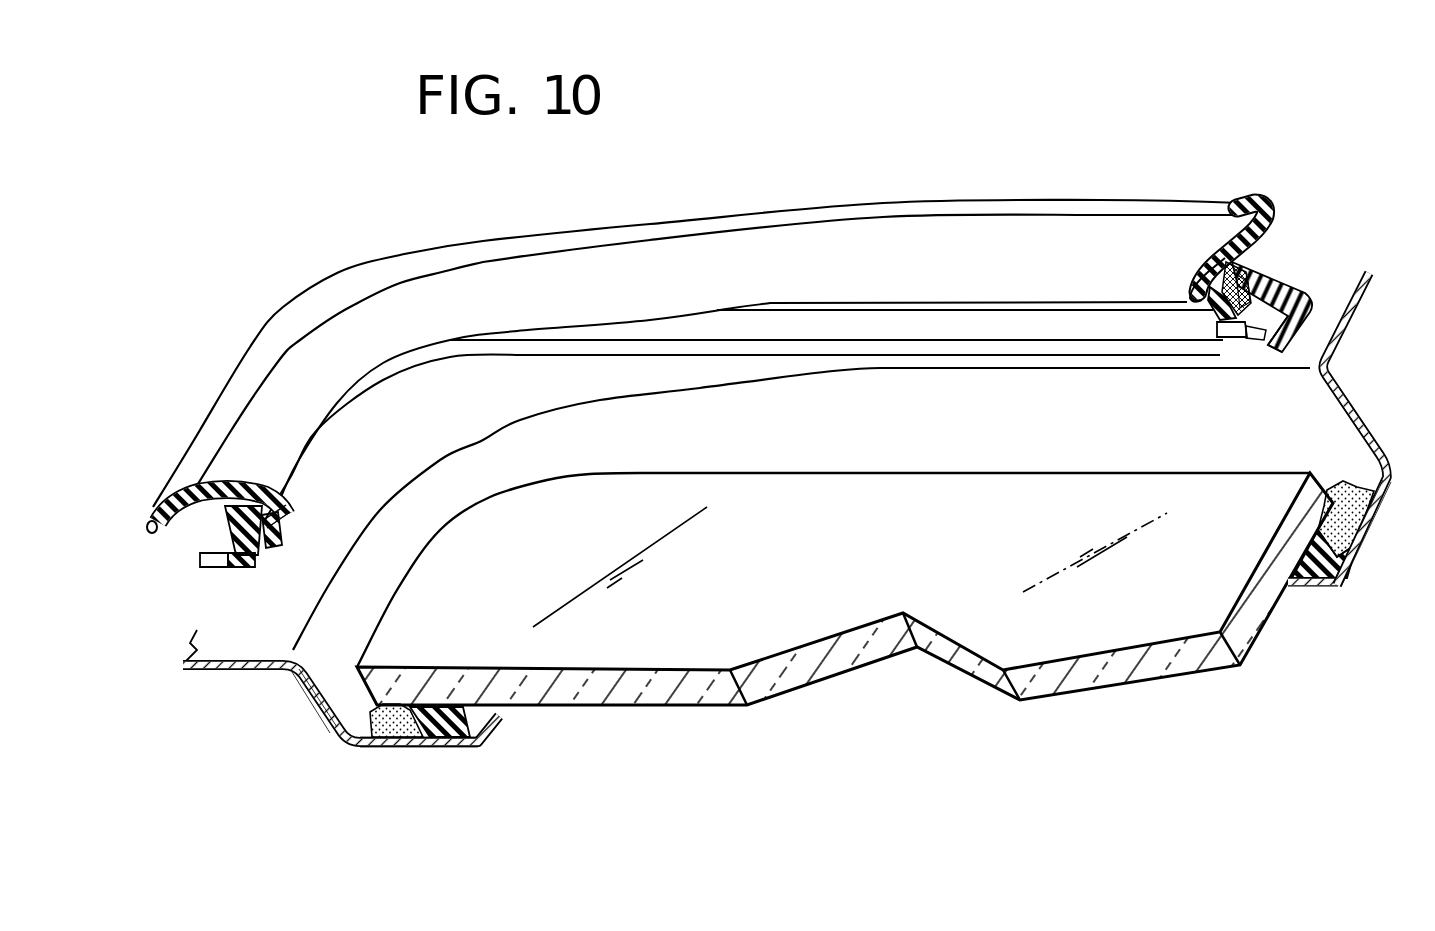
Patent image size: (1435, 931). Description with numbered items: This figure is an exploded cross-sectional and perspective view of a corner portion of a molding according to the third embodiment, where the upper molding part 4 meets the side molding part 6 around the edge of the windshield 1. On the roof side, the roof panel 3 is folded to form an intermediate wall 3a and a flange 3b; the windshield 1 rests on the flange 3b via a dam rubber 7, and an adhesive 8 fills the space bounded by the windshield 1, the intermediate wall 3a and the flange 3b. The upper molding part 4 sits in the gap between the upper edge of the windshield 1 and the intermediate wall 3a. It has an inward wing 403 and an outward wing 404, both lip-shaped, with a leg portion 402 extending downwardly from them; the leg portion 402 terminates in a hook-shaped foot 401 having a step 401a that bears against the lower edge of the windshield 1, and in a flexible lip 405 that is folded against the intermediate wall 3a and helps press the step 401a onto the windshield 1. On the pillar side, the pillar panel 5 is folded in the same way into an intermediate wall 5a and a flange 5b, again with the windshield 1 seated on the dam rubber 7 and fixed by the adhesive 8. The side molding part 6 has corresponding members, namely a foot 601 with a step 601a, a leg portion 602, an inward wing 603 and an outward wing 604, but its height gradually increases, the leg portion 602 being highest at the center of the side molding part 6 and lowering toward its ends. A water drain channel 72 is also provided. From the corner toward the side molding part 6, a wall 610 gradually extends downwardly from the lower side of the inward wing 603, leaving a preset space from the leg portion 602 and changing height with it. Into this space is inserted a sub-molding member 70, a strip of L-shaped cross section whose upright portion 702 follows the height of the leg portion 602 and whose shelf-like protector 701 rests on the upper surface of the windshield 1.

The windshield 1 is at (1133, 625).
The roof panel 3 is at (250, 646).
The intermediate wall 3a is at (317, 717).
The flange 3b is at (385, 748).
The upper molding part 4 is at (230, 504).
The foot 401 is at (266, 548).
The step 401a is at (272, 522).
The leg portion 402 is at (230, 562).
The inward wing 403 is at (282, 488).
The outward wing 404 is at (150, 521).
The flexible lip 405 is at (205, 558).
The pillar panel 5 is at (1352, 310).
The intermediate wall 5a is at (1367, 427).
The flange 5b is at (1373, 521).
The side molding part 6 is at (934, 200).
The foot 601 is at (1277, 350).
The step 601a is at (1249, 345).
The leg portion 602 is at (1250, 273).
The inward wing 603 is at (1190, 295).
The outward wing 604 is at (1262, 196).
The wall 610 is at (1233, 322).
The dam rubber 7 is at (447, 717).
The sub-molding member 70 is at (1060, 343).
The shelf-like protector 701 is at (1253, 334).
The upright portion 702 is at (1253, 288).
The water drain channel 72 is at (1150, 318).
The adhesive 8 is at (403, 747).